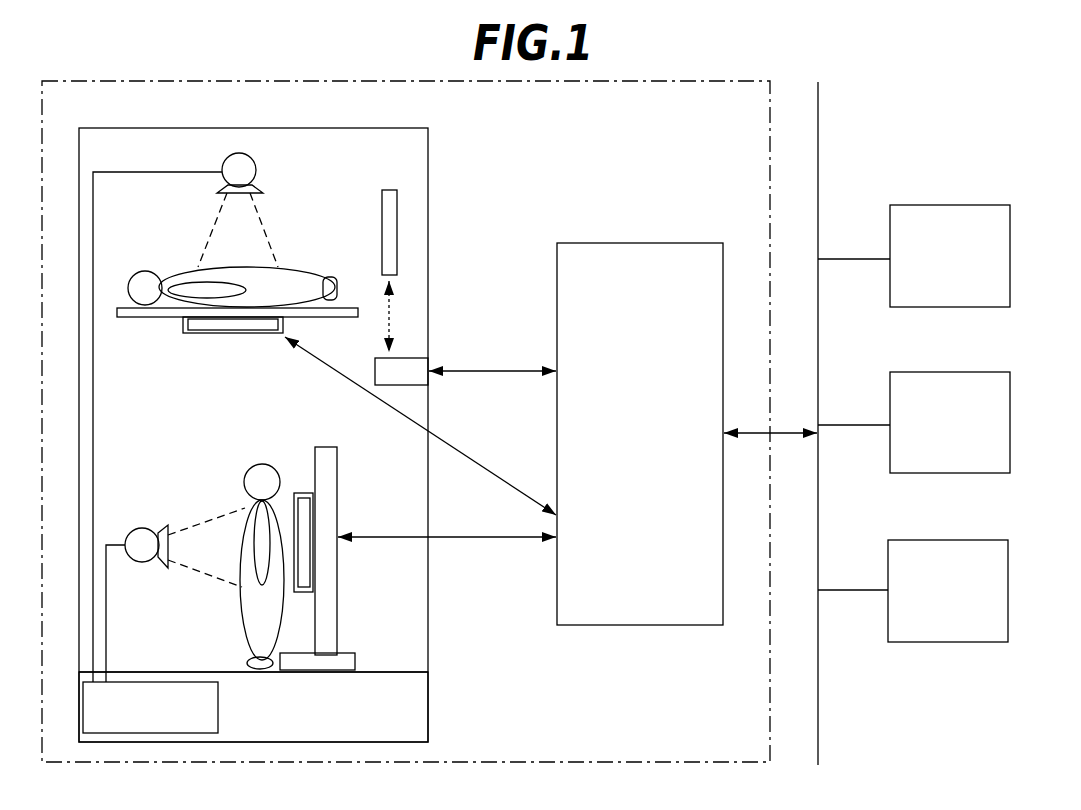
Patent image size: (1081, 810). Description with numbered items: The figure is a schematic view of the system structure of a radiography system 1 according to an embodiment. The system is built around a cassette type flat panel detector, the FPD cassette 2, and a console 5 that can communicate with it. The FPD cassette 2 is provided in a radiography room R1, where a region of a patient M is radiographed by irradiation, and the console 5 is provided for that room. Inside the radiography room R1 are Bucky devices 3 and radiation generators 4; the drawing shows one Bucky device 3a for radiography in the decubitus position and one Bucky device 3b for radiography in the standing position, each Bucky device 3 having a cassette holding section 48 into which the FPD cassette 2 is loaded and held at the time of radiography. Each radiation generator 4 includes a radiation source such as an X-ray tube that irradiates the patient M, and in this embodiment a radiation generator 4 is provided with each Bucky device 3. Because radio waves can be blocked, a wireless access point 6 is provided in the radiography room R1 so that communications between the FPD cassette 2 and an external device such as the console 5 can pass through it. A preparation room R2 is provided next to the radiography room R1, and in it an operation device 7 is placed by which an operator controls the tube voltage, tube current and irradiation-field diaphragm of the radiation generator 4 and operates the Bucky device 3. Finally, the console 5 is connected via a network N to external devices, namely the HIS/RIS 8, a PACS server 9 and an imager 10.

The radiography system 1 is at (702, 82).
The radiography room R1 is at (428, 165).
The preparation room R2 is at (425, 722).
The FPD cassette 2 is at (240, 323).
The Bucky device 3 is at (231, 489).
The Bucky device for radiography in the decubitus position 3a is at (158, 317).
The Bucky device for radiography in the standing position 3b is at (315, 460).
The radiation generator 4 is at (252, 158).
The console 5 is at (702, 243).
The wireless access point 6 is at (407, 358).
The operation device 7 is at (220, 712).
The HIS/RIS 8 is at (988, 205).
The PACS server 9 is at (983, 372).
The imager 10 is at (987, 540).
The cassette holding section 48 is at (195, 335).
The patient M is at (165, 264).
The network N is at (818, 700).